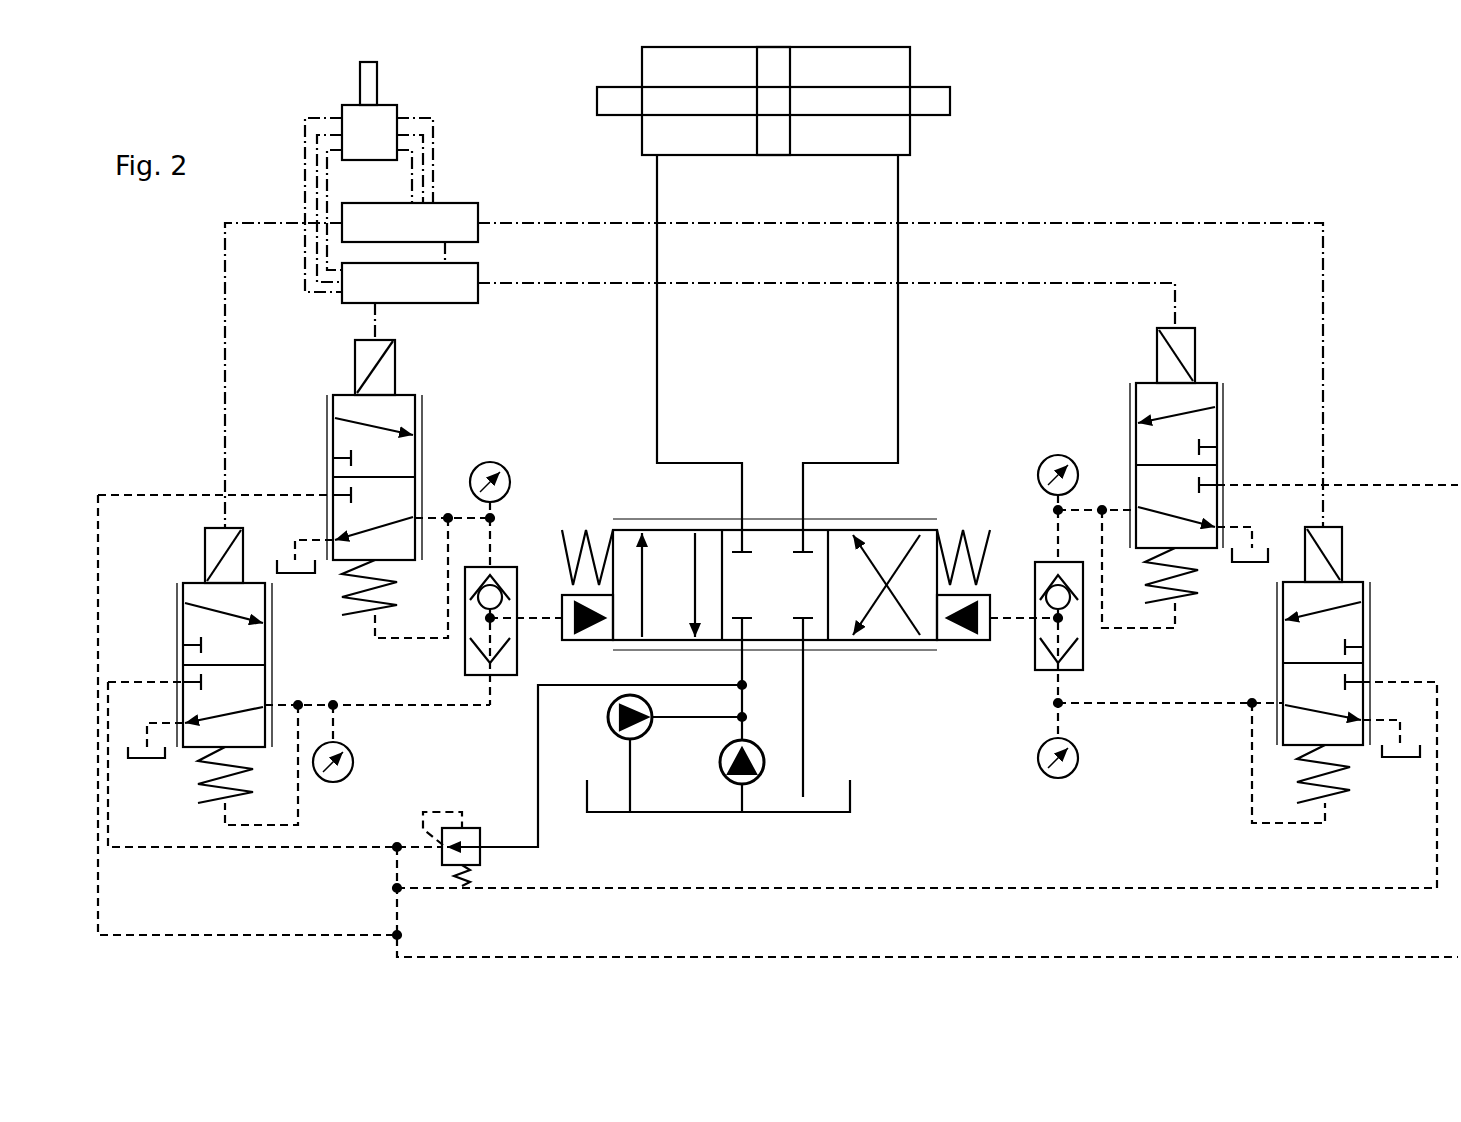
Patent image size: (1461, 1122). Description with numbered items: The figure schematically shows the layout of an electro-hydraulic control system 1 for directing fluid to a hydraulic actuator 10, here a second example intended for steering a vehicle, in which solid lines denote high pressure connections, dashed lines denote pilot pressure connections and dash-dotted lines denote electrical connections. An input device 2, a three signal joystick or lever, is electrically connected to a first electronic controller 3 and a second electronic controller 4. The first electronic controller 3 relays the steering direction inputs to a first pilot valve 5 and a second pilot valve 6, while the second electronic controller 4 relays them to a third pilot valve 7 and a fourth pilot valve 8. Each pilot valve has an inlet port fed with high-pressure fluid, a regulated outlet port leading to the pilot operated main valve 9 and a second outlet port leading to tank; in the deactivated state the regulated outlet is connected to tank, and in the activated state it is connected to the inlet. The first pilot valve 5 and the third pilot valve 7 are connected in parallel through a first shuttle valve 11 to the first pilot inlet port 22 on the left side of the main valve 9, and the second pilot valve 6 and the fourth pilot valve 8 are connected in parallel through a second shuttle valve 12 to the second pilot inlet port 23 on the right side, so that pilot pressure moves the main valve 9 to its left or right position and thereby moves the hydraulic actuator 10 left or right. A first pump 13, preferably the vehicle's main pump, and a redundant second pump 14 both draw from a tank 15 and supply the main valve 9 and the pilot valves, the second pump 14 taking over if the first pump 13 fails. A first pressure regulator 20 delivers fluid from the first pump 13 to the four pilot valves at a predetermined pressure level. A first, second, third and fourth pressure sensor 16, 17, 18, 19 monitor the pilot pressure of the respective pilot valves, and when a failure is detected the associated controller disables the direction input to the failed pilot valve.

The electro-hydraulic control system 1 is at (1168, 139).
The input device 2 is at (360, 82).
The first electronic controller 3 is at (468, 202).
The second electronic controller 4 is at (478, 285).
The first pilot valve 5 is at (265, 652).
The second pilot valve 6 is at (1283, 648).
The third pilot valve 7 is at (413, 458).
The fourth pilot valve 8 is at (1135, 455).
The pilot operated main valve 9 is at (902, 530).
The hydraulic actuator 10 is at (597, 100).
The first shuttle valve 11 is at (465, 658).
The second shuttle valve 12 is at (1083, 652).
The first pump 13 is at (718, 762).
The second pump 14 is at (608, 722).
The tank 15 is at (850, 802).
The first pressure sensor 16 is at (353, 760).
The second pressure sensor 17 is at (1078, 755).
The third pressure sensor 18 is at (510, 482).
The fourth pressure sensor 19 is at (1040, 473).
The first pressure regulator 20 is at (470, 820).
The first pilot inlet port 22 is at (560, 622).
The second pilot inlet port 23 is at (990, 622).